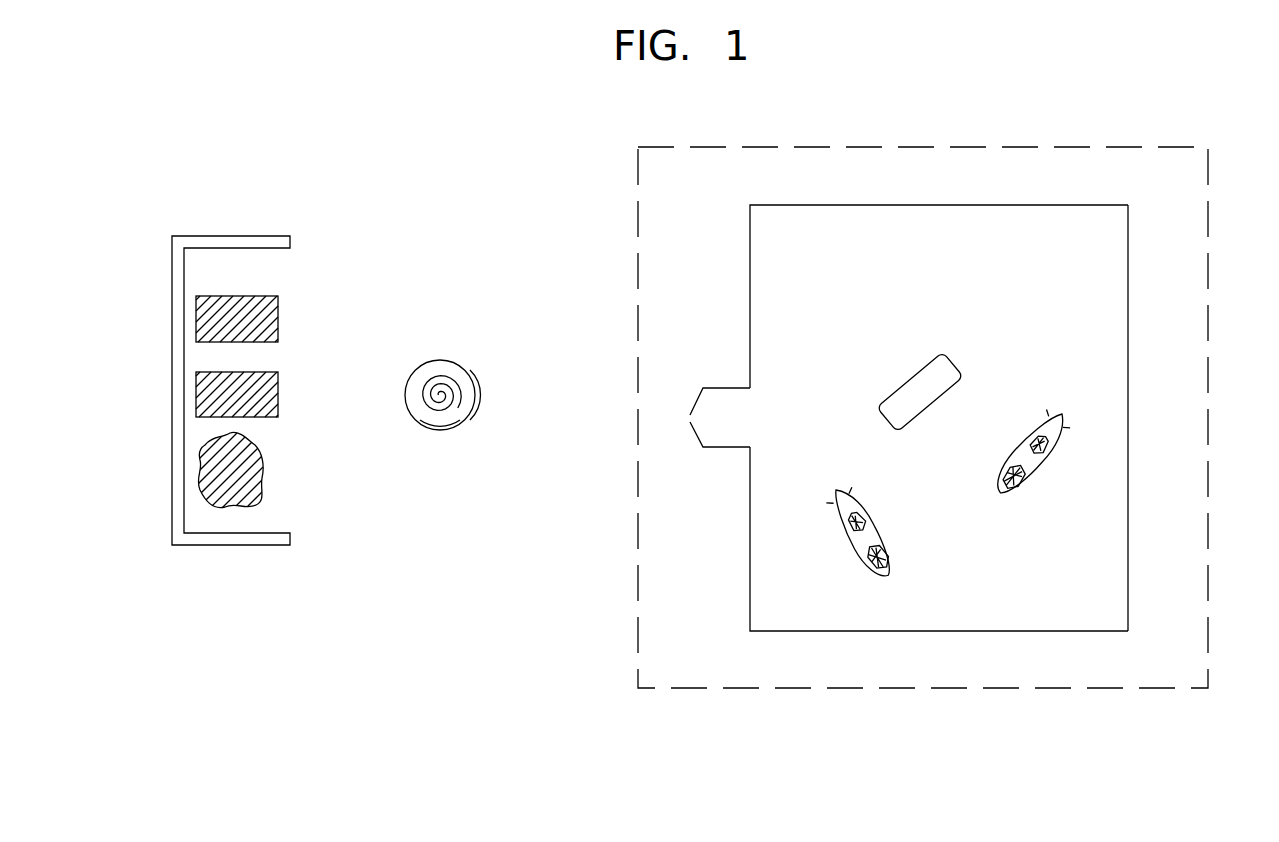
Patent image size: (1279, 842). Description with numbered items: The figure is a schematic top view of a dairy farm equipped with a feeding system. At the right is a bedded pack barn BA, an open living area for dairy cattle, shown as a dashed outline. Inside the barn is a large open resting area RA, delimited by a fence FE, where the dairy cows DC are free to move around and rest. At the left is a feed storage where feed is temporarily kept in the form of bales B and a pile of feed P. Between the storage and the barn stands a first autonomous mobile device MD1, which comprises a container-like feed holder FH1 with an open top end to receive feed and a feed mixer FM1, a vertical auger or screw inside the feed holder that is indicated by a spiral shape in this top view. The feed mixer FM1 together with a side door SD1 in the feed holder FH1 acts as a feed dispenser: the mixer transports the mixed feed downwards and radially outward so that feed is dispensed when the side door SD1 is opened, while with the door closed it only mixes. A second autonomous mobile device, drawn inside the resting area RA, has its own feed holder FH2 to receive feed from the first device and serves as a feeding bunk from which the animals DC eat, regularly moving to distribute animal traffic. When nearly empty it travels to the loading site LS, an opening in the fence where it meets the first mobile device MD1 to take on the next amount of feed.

The bales B is at (260, 390).
The pile of feed P is at (249, 488).
The feed holder FH1 is at (460, 352).
The feed mixer FM1 is at (463, 390).
The side door SD1 is at (477, 397).
The first autonomous mobile device MD1 is at (442, 428).
The loading site LS is at (727, 408).
The resting area RA is at (1024, 252).
The bedded pack barn BA is at (1157, 148).
The fence FE is at (1128, 308).
The feed holder FH2 is at (953, 367).
The dairy cows DC is at (1020, 468).